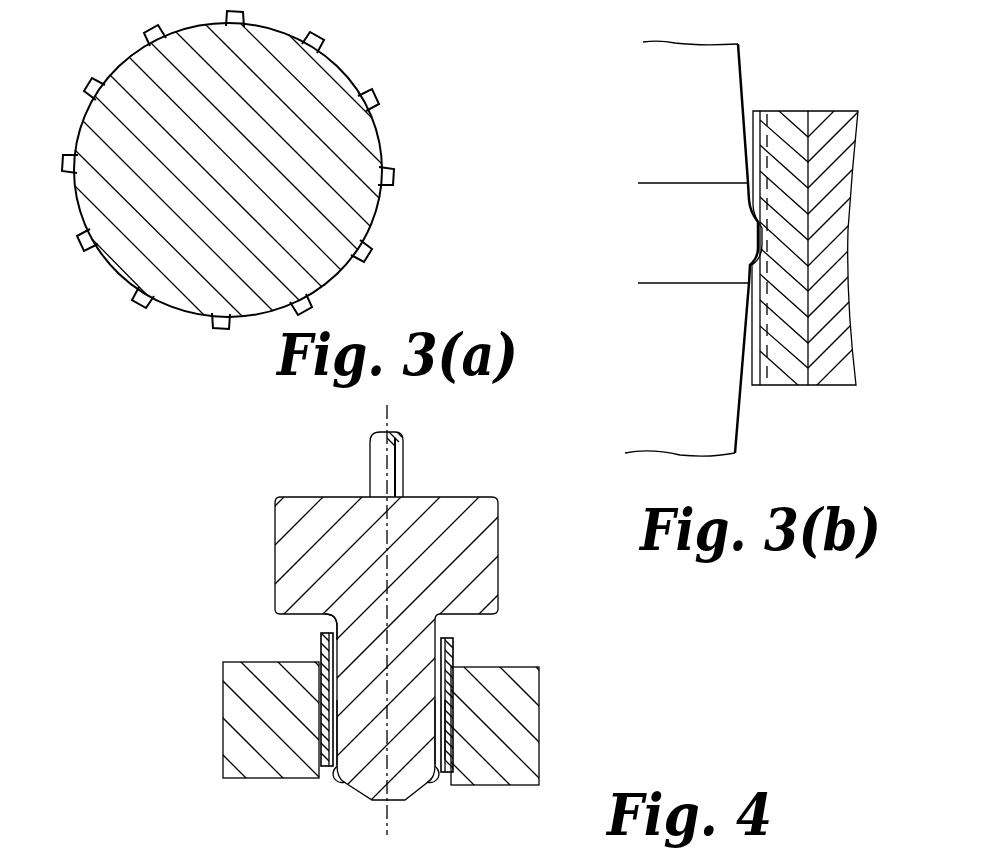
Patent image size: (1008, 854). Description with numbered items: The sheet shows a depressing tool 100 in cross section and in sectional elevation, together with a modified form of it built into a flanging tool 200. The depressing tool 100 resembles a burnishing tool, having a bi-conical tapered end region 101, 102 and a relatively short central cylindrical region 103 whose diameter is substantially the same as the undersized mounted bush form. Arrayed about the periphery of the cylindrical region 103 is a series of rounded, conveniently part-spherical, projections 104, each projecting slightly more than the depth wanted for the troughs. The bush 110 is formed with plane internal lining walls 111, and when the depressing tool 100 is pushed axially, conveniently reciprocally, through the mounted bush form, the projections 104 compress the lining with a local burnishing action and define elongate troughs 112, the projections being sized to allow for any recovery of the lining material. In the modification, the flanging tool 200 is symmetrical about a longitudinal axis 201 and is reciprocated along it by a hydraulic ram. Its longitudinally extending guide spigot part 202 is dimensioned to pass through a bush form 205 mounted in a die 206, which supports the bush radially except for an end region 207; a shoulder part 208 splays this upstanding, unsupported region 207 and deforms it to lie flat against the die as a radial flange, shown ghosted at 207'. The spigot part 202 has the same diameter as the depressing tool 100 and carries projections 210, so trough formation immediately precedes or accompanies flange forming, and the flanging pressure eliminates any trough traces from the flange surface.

In FIG. 3A, the depressing tool 100 is at (340, 290).
In FIG. 3B, the depressing tool 100 is at (750, 433).
In FIG. 3B, the bi-conical tapered end region 101 is at (684, 124).
In FIG. 3B, the bi-conical tapered end region 102 is at (682, 372).
In FIG. 3A, the central cylindrical region 103 is at (327, 128).
In FIG. 3B, the central cylindrical region 103 is at (683, 246).
In FIG. 3A, the projections 104 is at (368, 240).
In FIG. 3B, the bush 110 is at (808, 105).
In FIG. 3B, the internal lining walls 111 is at (782, 130).
In FIG. 3B, the elongate troughs 112 is at (754, 108).
In FIG. 4, the flanging tool 200 is at (240, 527).
In FIG. 4, the longitudinal axis 201 is at (386, 424).
In FIG. 4, the guide spigot part 202 is at (394, 760).
In FIG. 4, the bush form 205 is at (455, 755).
In FIG. 4, the die 206 is at (520, 747).
In FIG. 4, the end region 207 is at (510, 686).
In FIG. 4, the radial flange 207' is at (237, 699).
In FIG. 4, the shoulder part 208 is at (290, 620).
In FIG. 4, the projections 210 is at (338, 782).